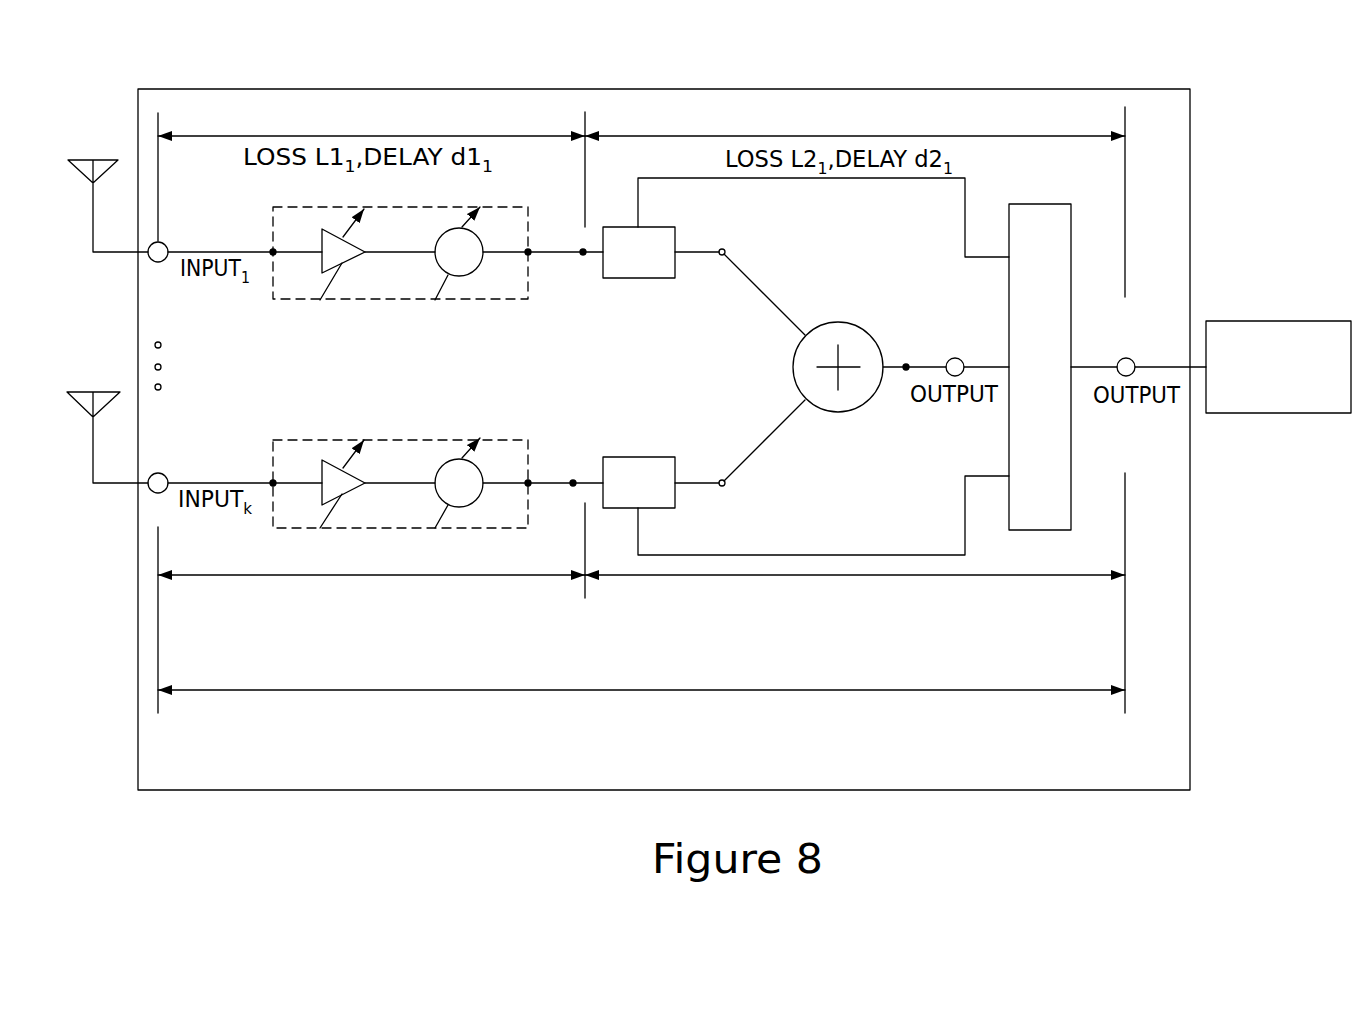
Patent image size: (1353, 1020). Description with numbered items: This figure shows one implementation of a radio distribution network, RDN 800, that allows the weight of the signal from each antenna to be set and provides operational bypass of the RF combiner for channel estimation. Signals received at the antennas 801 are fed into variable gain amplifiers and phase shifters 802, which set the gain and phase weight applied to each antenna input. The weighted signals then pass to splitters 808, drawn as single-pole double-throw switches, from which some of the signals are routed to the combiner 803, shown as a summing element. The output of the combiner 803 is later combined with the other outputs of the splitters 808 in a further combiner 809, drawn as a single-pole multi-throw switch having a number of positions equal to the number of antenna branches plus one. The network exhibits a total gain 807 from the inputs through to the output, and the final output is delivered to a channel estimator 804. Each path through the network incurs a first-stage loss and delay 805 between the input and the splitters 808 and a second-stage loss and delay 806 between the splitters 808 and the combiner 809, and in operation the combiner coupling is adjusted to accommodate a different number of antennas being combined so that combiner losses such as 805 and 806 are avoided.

The RDN 800 is at (655, 401).
The antennas 801 is at (101, 321).
The variable gain amplifiers and phase shifters 802 is at (376, 389).
The combiner 803 is at (854, 332).
The channel estimator 804 is at (1278, 342).
The combiner loss 805 is at (371, 621).
The combiner loss 806 is at (855, 621).
The total gain 807 is at (641, 736).
The splitters 808 is at (761, 366).
The combiner 809 is at (989, 367).